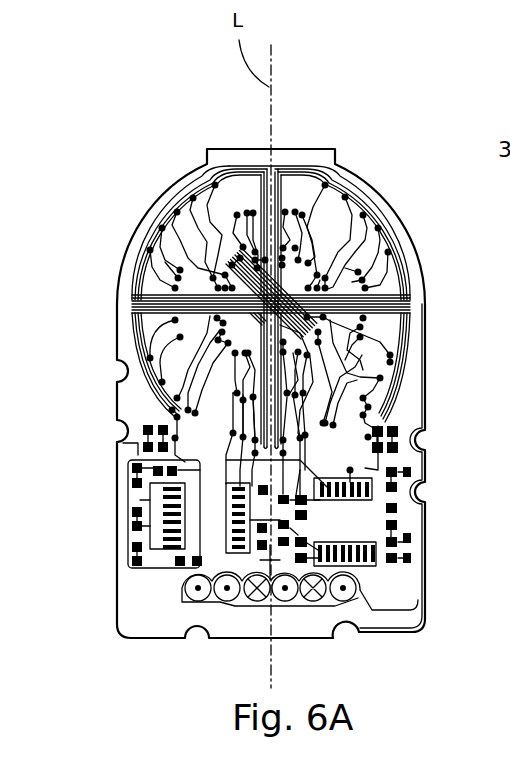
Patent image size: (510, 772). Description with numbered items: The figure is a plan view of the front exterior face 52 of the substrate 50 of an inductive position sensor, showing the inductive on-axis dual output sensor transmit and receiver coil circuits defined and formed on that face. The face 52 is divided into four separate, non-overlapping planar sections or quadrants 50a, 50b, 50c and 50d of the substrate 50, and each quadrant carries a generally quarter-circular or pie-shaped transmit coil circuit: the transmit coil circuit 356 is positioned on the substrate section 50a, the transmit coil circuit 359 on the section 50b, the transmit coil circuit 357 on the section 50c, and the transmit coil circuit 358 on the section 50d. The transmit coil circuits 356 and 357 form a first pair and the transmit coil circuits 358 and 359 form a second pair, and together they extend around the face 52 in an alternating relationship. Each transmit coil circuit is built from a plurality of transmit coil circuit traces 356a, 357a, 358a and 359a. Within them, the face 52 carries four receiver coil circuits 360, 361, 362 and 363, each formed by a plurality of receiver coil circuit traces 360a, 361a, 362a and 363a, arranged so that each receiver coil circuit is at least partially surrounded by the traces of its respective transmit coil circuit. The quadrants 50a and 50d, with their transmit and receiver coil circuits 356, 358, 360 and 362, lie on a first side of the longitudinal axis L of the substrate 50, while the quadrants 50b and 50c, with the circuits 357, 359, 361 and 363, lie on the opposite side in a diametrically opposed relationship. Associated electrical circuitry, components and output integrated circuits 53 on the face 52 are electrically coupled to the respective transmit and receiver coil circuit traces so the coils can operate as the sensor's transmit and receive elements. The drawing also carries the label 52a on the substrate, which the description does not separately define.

The substrate 50 is at (165, 642).
The substrate section 50a is at (252, 186).
The substrate section 50b is at (290, 180).
The substrate section 50c is at (343, 380).
The substrate section 50d is at (138, 408).
The exterior face 52 is at (148, 590).
The board edge 52a is at (413, 345).
The output integrated circuits 53 is at (165, 535).
The transmit coil circuit 356 is at (162, 203).
The transmit coil circuit traces 356a is at (188, 190).
The transmit coil circuit 357 is at (416, 357).
The transmit coil circuit traces 357a is at (372, 353).
The transmit coil circuit 358 is at (122, 346).
The transmit coil circuit traces 358a is at (174, 318).
The transmit coil circuit 359 is at (372, 185).
The transmit coil circuit traces 359a is at (380, 210).
The receiver coil circuit 360 is at (176, 240).
The receiver coil circuit traces 360a is at (170, 258).
The receiver coil circuit 361 is at (390, 339).
The receiver coil circuit traces 361a is at (372, 318).
The receiver coil circuit 362 is at (177, 352).
The receiver coil circuit traces 362a is at (168, 370).
The receiver coil circuit 363 is at (326, 214).
The receiver coil circuit traces 363a is at (360, 184).